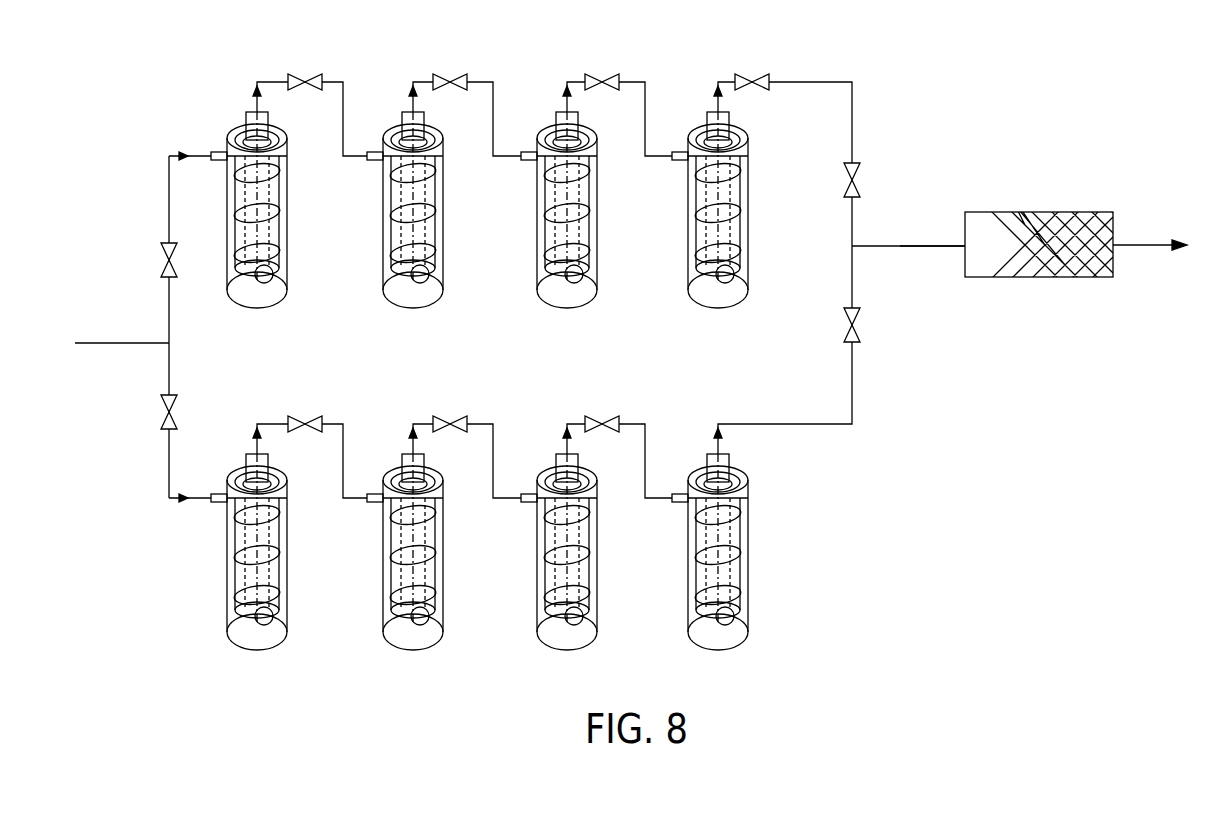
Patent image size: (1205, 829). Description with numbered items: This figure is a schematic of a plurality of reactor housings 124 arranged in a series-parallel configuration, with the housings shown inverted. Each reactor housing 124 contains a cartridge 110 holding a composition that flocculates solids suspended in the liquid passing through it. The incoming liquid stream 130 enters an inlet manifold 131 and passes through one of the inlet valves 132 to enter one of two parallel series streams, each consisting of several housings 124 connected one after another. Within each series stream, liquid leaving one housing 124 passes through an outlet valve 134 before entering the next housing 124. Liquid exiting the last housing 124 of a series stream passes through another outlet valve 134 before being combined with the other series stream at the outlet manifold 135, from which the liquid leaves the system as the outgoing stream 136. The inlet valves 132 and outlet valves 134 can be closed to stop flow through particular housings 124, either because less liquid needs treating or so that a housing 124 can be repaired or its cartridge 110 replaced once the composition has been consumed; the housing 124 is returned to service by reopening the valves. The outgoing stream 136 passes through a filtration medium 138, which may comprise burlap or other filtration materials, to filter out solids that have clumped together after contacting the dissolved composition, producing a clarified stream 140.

The cartridge 110 is at (287, 272).
The reactor housing 124 is at (229, 284).
The incoming liquid stream 130 is at (118, 343).
The inlet manifold 131 is at (167, 343).
The inlet valve 132 is at (160, 256).
The outlet valve 134 is at (298, 73).
The outlet manifold 135 is at (856, 245).
The outgoing stream 136 is at (930, 246).
The filtration medium 138 is at (1046, 212).
The clarified stream 140 is at (1136, 244).